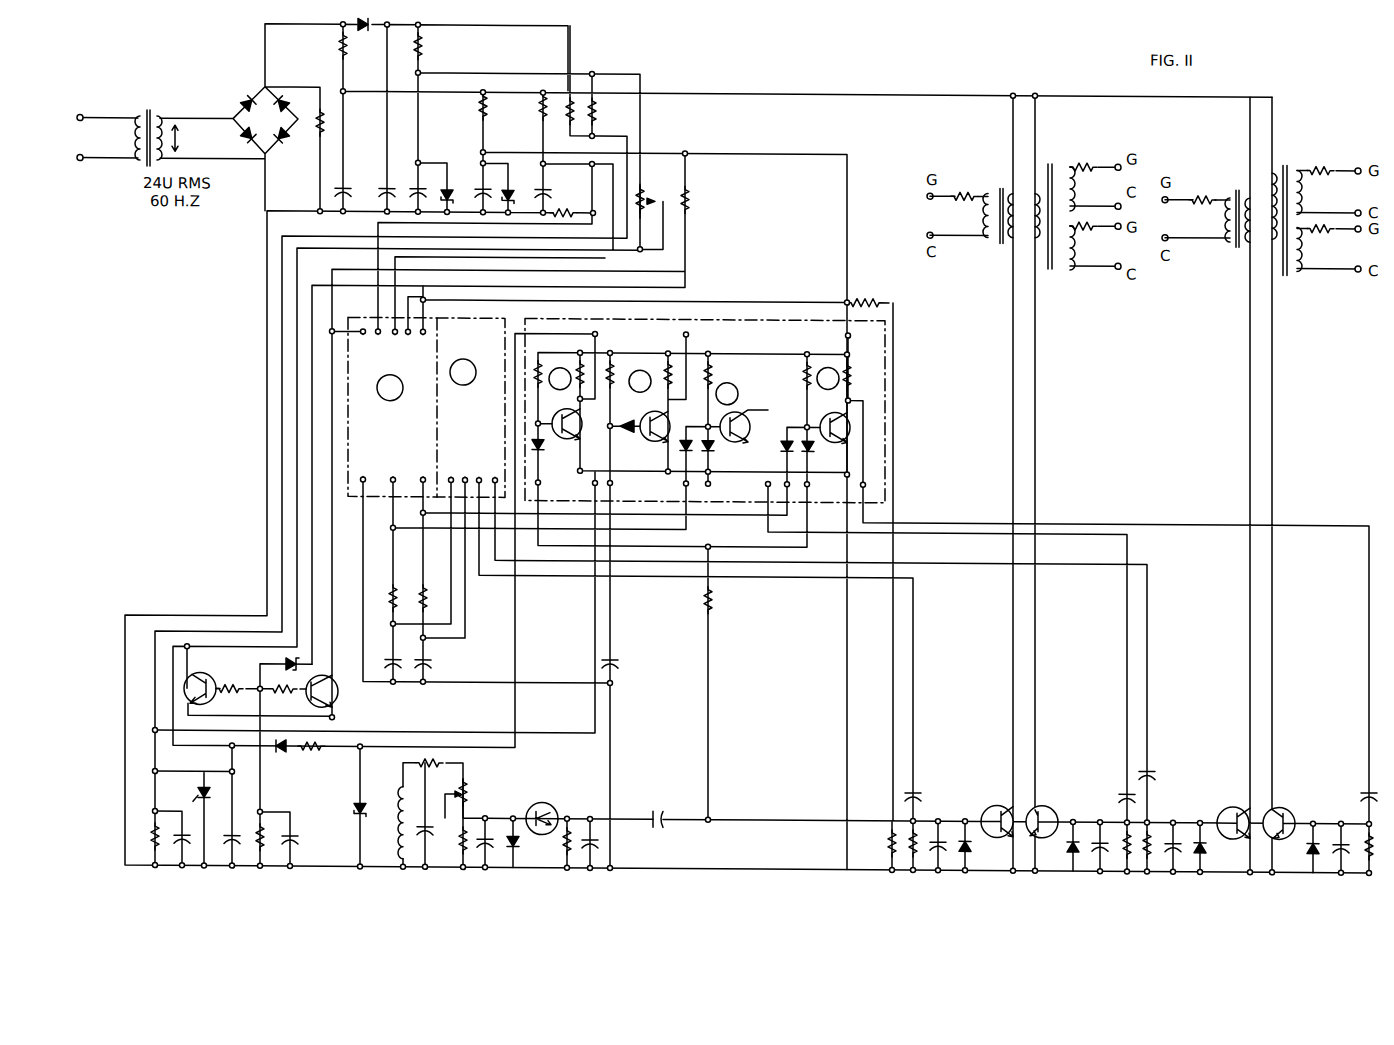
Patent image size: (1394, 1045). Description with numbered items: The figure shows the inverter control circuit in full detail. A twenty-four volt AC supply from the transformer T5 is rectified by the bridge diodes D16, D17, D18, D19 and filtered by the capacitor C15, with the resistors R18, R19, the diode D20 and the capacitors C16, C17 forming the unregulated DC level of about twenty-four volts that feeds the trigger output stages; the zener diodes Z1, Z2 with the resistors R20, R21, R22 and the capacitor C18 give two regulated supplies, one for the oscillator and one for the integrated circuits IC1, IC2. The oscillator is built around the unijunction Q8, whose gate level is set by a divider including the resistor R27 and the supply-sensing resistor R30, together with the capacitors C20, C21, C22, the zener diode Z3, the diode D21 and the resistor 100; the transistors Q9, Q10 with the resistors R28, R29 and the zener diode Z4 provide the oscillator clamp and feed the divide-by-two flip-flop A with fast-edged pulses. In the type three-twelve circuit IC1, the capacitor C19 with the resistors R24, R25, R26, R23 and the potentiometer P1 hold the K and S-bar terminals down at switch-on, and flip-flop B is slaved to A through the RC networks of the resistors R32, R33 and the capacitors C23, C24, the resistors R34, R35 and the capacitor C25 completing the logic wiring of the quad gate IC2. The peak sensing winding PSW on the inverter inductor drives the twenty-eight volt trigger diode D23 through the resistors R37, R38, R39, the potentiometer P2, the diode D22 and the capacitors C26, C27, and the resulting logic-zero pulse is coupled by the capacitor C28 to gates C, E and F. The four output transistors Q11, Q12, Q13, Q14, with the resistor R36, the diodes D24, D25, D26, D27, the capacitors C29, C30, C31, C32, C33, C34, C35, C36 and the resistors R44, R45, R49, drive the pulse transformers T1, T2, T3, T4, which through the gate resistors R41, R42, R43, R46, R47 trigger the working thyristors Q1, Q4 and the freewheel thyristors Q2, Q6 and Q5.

The transformer T5 is at (150, 112).
The bridge rectifier diode D16 is at (248, 96).
The bridge rectifier diode D17 is at (284, 96).
The bridge rectifier diode D18 is at (240, 139).
The bridge rectifier diode D19 is at (286, 142).
The resistor R18 is at (325, 125).
The resistor R19 is at (339, 54).
The diode D20 is at (367, 32).
The capacitor C15 is at (354, 183).
The capacitor C16 is at (382, 212).
The resistor R20 is at (423, 52).
The resistor R21 is at (478, 117).
The resistor R22 is at (538, 119).
The capacitor C17 is at (418, 180).
The capacitor C18 is at (480, 170).
The zener diode Z1 is at (456, 182).
The zener diode Z2 is at (518, 182).
The capacitor C19 is at (559, 198).
The resistor R25 is at (572, 90).
The resistor R26 is at (594, 122).
The resistor R24 is at (568, 214).
The potentiometer P1 is at (650, 200).
The resistor R23 is at (640, 188).
The resistor R35 is at (866, 296).
The integrated circuit IC1 is at (443, 314).
The integrated circuit IC2 is at (600, 314).
The working thyristor Q1 is at (946, 216).
The resistor R41 is at (962, 188).
The pulse transformer T1 is at (1001, 238).
The pulse transformer T2 is at (1052, 268).
The resistor R42 is at (1084, 159).
The resistor R43 is at (1088, 224).
The freewheel thyristor Q5 is at (1124, 258).
The working thyristor Q4 is at (1194, 219).
The resistor R46 is at (1206, 192).
The pulse transformer T3 is at (1240, 238).
The pulse transformer T4 is at (1286, 166).
The resistor R47 is at (1308, 162).
The freewheel thyristor Q2 is at (1333, 194).
The freewheel thyristor Q6 is at (1333, 249).
The resistor R32 is at (410, 602).
The resistor R33 is at (425, 590).
The capacitor C23 is at (397, 673).
The capacitor C24 is at (431, 662).
The capacitor C25 is at (618, 662).
The resistor R34 is at (712, 600).
The transistor Q9 is at (200, 676).
The resistor R28 is at (248, 696).
The resistor R29 is at (330, 694).
The transistor Q10 is at (338, 688).
The zener diode Z4 is at (274, 663).
The diode D21 is at (272, 748).
The 100 ohm resistor 100 is at (322, 761).
The unijunction transistor Q8 is at (198, 794).
The resistor R27 is at (150, 836).
The capacitor C20 is at (182, 857).
The capacitor C21 is at (232, 854).
The resistor R30 is at (262, 826).
The capacitor C22 is at (306, 854).
The zener diode Z3 is at (366, 806).
The peak sensing winding PSW is at (402, 842).
The resistor R37 is at (418, 763).
The capacitor C26 is at (488, 816).
The potentiometer P2 is at (466, 784).
The trigger diode D23 is at (546, 806).
The resistor R38 is at (466, 862).
The diode D22 is at (516, 848).
The resistor R39 is at (570, 862).
The capacitor C27 is at (600, 842).
The capacitor C28 is at (670, 806).
The resistor R36 is at (892, 842).
The capacitor C29 is at (922, 792).
The capacitor C30 is at (939, 834).
The diode D24 is at (970, 844).
The output transistor Q11 is at (1000, 800).
The output transistor Q12 is at (1044, 802).
The diode D25 is at (1070, 856).
The capacitor C31 is at (1098, 828).
The capacitor C32 is at (1122, 788).
The resistor R44 is at (1126, 858).
The capacitor C33 is at (1152, 768).
The resistor R45 is at (1150, 830).
The capacitor C34 is at (1176, 856).
The diode D26 is at (1205, 850).
The output transistor Q13 is at (1232, 804).
The output transistor Q14 is at (1282, 804).
The diode D27 is at (1310, 856).
The capacitor C35 is at (1340, 832).
The capacitor C36 is at (1368, 784).
The resistor R49 is at (1368, 856).